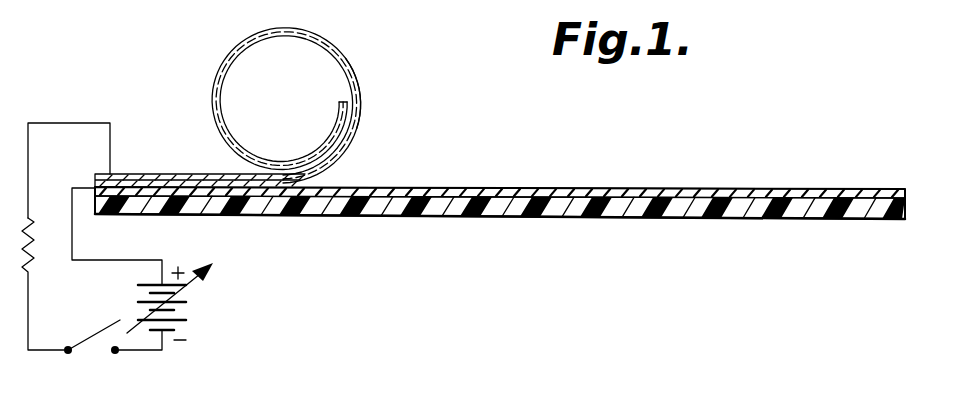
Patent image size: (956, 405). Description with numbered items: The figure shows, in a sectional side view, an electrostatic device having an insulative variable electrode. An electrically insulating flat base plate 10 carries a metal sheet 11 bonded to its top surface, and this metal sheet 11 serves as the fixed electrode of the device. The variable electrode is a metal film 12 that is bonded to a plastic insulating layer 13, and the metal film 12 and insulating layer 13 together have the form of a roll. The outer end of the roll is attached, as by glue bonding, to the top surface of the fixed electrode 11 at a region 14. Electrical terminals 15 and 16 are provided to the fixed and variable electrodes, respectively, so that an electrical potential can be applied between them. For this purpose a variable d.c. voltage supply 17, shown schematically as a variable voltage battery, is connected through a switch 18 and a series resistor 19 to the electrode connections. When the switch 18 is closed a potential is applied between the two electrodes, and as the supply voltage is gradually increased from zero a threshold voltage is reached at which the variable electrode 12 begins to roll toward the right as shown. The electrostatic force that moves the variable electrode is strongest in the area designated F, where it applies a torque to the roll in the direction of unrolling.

The base plate 10 is at (627, 210).
The metal sheet 11 is at (655, 158).
The metal film 12 is at (342, 60).
The plastic insulating layer 13 is at (348, 74).
The region 14 is at (200, 164).
The electrical terminal 15 is at (93, 187).
The electrical terminal 16 is at (106, 172).
The variable d.c. voltage supply 17 is at (187, 310).
The switch 18 is at (90, 338).
The series resistor 19 is at (40, 263).
The area of strongest electrostatic force F is at (333, 178).